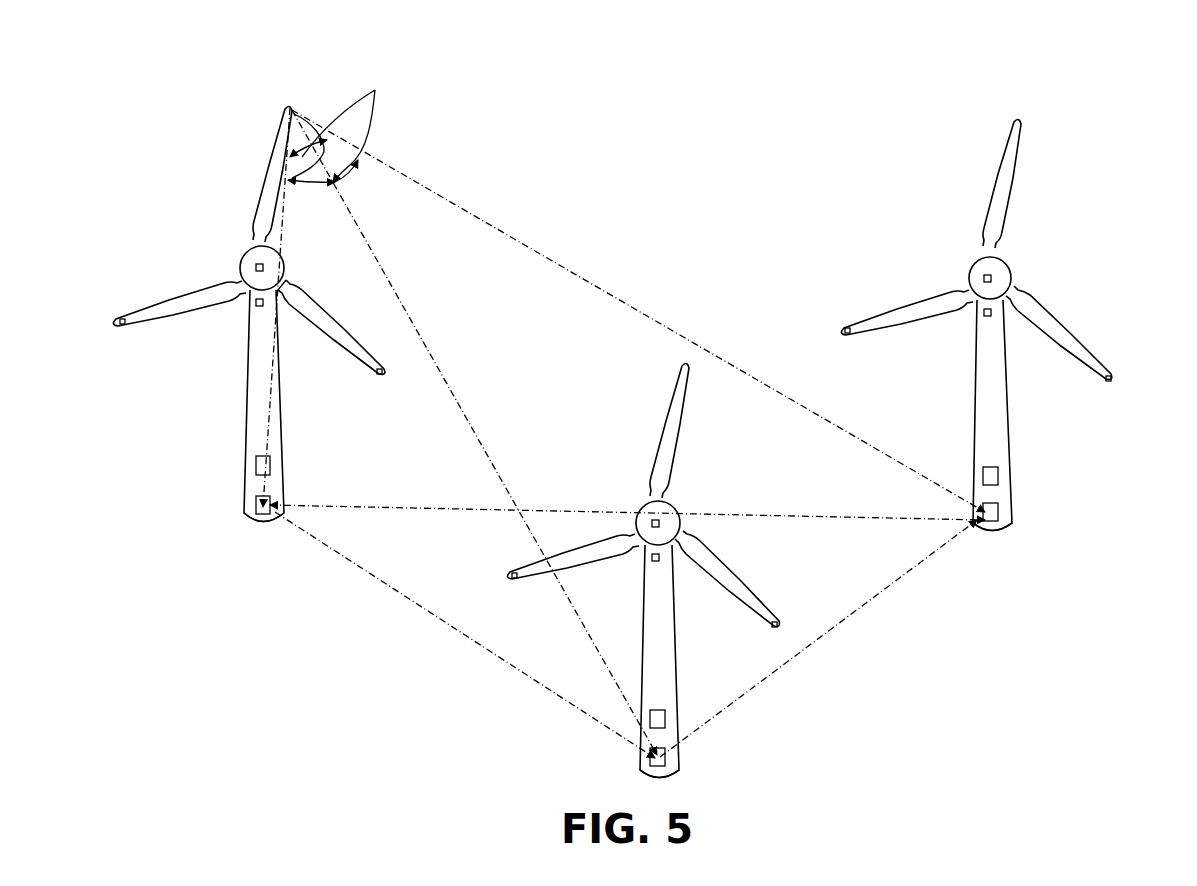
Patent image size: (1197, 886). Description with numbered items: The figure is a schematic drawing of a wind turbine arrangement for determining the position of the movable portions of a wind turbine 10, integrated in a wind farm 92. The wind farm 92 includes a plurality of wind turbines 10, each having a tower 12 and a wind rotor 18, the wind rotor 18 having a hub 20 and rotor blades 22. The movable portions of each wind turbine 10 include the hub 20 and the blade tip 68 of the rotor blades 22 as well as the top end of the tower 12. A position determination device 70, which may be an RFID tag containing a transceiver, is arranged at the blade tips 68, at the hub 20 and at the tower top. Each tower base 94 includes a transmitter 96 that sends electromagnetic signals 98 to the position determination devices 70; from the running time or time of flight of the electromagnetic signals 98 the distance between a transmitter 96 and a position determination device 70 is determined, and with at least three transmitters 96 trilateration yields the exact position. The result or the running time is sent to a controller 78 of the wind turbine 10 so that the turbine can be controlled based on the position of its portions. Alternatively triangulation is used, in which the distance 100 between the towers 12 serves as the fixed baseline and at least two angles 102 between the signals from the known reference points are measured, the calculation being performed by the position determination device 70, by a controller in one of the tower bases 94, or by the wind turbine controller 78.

The wind turbine 10 is at (158, 133).
The tower 12 is at (257, 415).
The wind rotor 18 is at (172, 245).
The hub 20 is at (270, 263).
The rotor blades 22 is at (305, 295).
The blade tip 68 is at (273, 130).
The position determination device 70 is at (288, 113).
The controller 78 is at (240, 358).
The wind farm 92 is at (610, 167).
The tower base 94 is at (207, 510).
The transmitter 96 is at (253, 502).
The electromagnetic signals 98 is at (267, 403).
The distance between towers 100 is at (353, 507).
The angles 102 is at (375, 90).